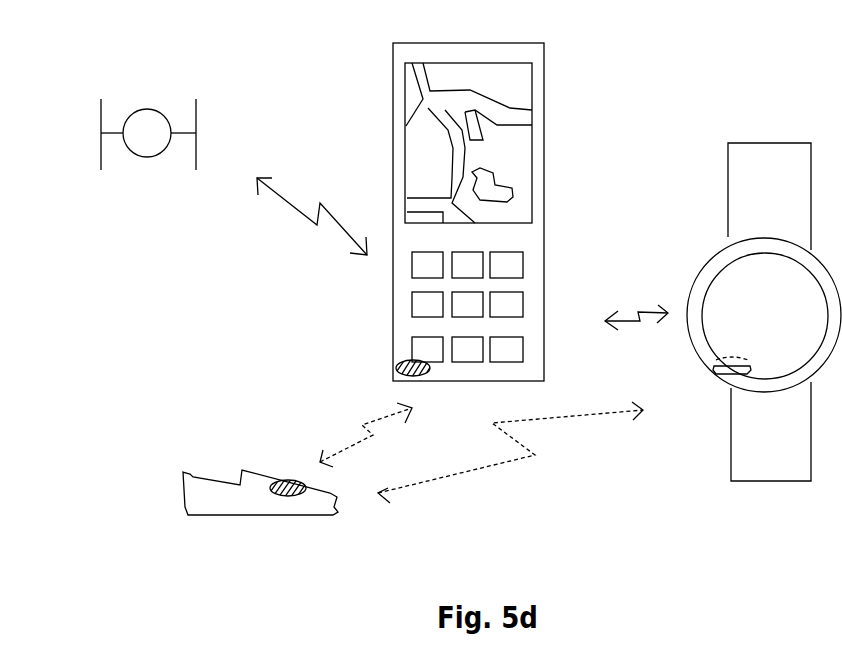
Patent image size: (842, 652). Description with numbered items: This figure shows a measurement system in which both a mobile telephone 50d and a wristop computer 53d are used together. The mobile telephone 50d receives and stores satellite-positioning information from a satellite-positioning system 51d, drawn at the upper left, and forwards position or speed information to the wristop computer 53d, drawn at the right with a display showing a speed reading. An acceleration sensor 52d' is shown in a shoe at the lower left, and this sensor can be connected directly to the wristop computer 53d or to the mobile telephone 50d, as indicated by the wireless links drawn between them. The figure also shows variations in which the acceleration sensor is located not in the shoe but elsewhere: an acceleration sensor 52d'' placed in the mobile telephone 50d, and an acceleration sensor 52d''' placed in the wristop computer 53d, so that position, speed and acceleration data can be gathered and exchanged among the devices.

The satellite-positioning system 51d is at (101, 158).
The mobile telephone 50d is at (535, 299).
The wristop computer 53d is at (715, 255).
The acceleration sensor 52d' is at (260, 444).
The acceleration sensor 52d'' is at (350, 341).
The acceleration sensor 52d''' is at (690, 427).